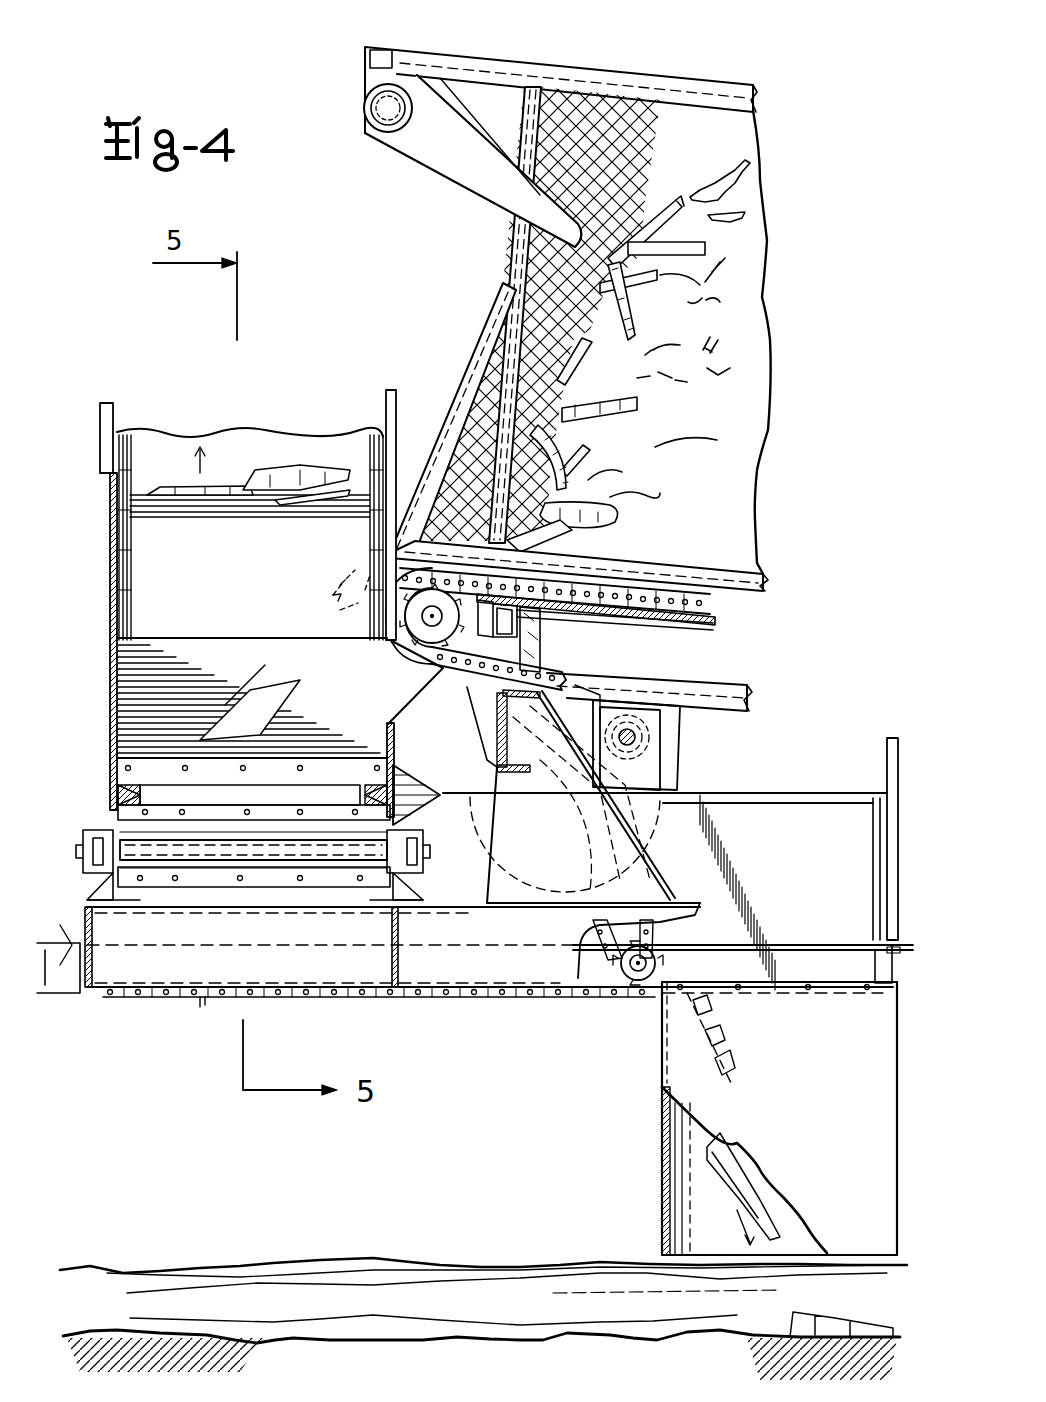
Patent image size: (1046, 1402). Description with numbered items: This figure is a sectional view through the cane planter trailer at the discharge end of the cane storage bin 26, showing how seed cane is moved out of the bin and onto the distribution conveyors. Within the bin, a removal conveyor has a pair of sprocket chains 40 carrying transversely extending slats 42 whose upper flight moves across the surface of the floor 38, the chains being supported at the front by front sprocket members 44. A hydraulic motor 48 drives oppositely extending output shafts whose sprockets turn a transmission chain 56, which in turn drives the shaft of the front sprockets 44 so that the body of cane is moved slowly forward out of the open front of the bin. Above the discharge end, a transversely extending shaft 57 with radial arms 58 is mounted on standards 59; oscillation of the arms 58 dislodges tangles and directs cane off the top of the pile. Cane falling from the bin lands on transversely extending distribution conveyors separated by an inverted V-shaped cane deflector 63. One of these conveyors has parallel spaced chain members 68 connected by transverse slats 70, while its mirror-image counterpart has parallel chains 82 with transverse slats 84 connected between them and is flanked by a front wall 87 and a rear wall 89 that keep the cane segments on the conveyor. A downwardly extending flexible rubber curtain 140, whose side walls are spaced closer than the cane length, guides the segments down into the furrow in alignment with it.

The cane storage bin 26 is at (692, 85).
The floor 38 is at (557, 604).
The sprocket chains 40 is at (615, 610).
The transversely extending slats 42 is at (684, 618).
The front sprocket members 44 is at (392, 650).
The hydraulic motor 48 is at (647, 733).
The transmission chain 56 is at (590, 700).
The transversely extending shaft 57 is at (364, 106).
The radial arms 58 is at (456, 178).
The standards 59 is at (476, 60).
The inverted V-shaped cane deflector 63 is at (193, 647).
The chain members 68 is at (122, 543).
The transverse slats 70 is at (267, 500).
The parallel chains 82 is at (130, 893).
The transverse slats 84 is at (275, 790).
The front wall 87 is at (112, 708).
The rear wall 89 is at (394, 741).
The flexible rubber curtain 140 is at (779, 1118).